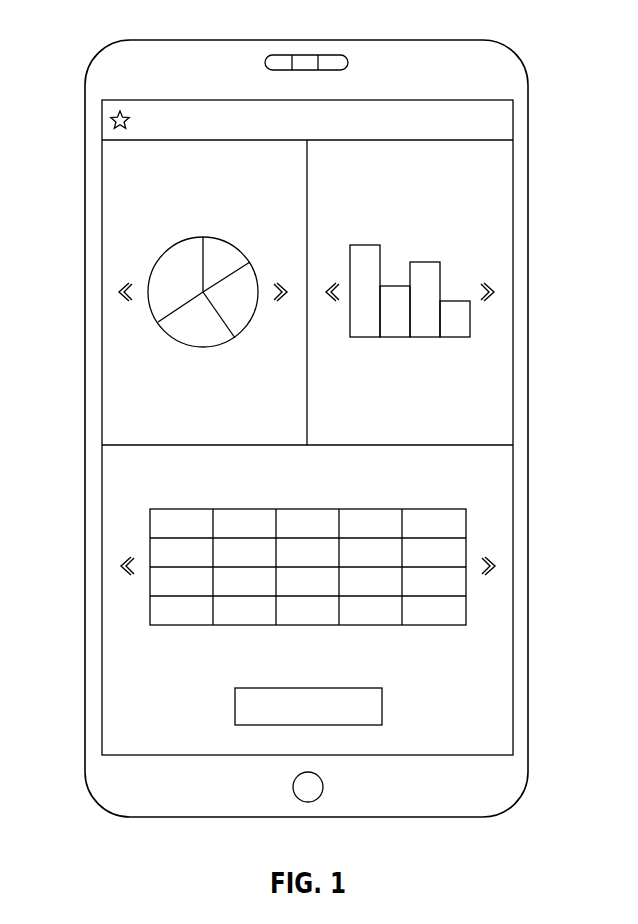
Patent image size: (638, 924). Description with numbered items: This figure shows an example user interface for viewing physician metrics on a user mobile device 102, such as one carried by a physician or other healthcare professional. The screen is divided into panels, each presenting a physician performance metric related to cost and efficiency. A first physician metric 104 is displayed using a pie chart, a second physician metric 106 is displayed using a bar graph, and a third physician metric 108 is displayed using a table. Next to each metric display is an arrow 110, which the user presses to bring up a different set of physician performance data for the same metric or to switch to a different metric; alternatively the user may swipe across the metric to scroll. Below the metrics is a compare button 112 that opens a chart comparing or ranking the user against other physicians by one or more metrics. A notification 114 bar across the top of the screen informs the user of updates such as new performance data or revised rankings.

The mobile device 102 is at (420, 40).
The first physician metric 104 is at (150, 277).
The second physician metric 106 is at (430, 275).
The third physician metric 108 is at (466, 523).
The arrow 110 is at (492, 290).
The compare button 112 is at (353, 725).
The notifications 114 is at (130, 112).